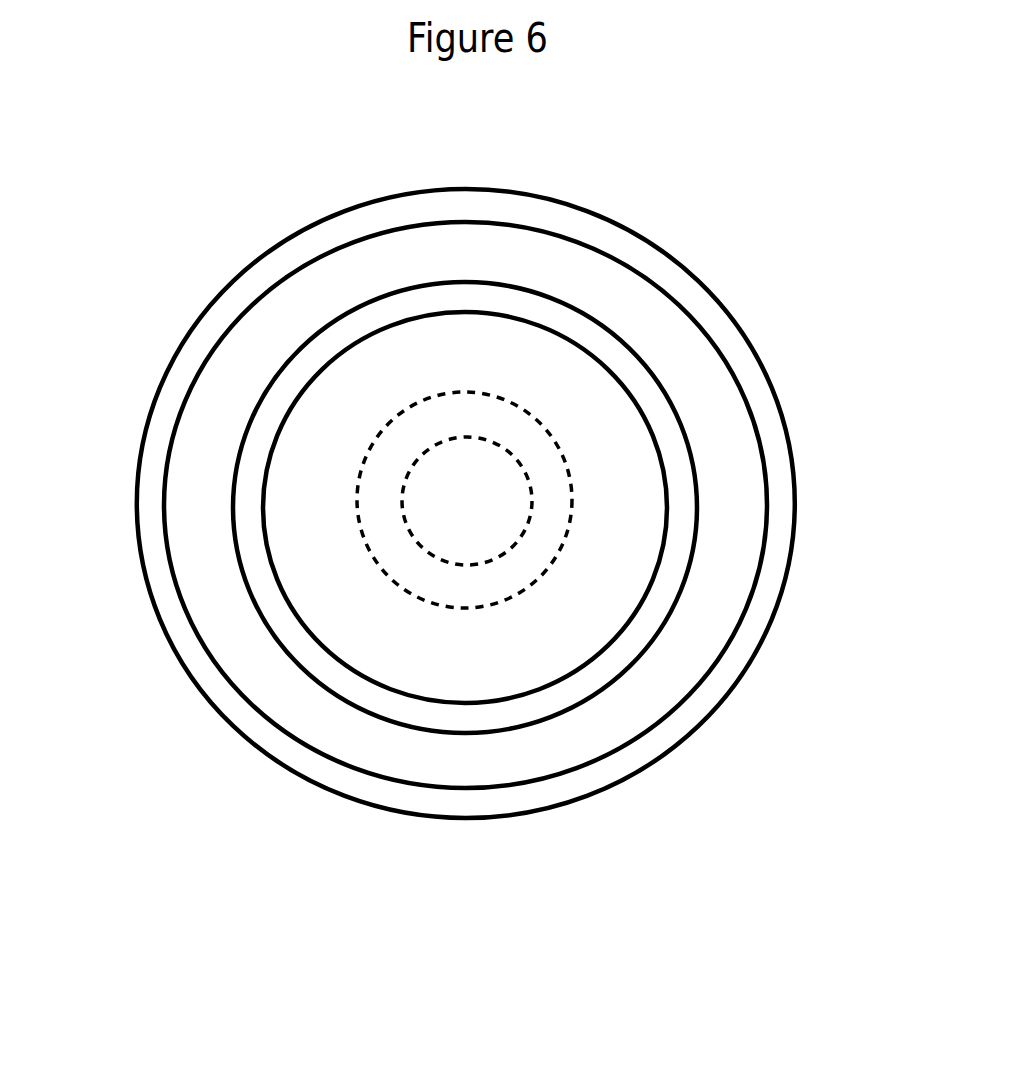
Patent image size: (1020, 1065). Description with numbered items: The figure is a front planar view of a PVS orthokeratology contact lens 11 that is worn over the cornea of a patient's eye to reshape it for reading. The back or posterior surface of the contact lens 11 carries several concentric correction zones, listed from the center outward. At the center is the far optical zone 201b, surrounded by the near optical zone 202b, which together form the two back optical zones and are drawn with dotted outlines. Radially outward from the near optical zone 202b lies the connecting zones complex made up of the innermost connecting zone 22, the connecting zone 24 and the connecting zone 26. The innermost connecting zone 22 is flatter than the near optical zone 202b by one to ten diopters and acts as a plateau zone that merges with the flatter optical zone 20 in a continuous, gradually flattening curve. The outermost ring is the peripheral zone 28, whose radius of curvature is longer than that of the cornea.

The contact lens 11 is at (257, 808).
The optical zone 20 is at (360, 525).
The innermost connecting zone 22 is at (580, 593).
The connecting zone 24 is at (612, 662).
The connecting zone 26 is at (663, 344).
The peripheral zone 28 is at (636, 252).
The far optical zone 201b is at (470, 500).
The near optical zone 202b is at (533, 452).